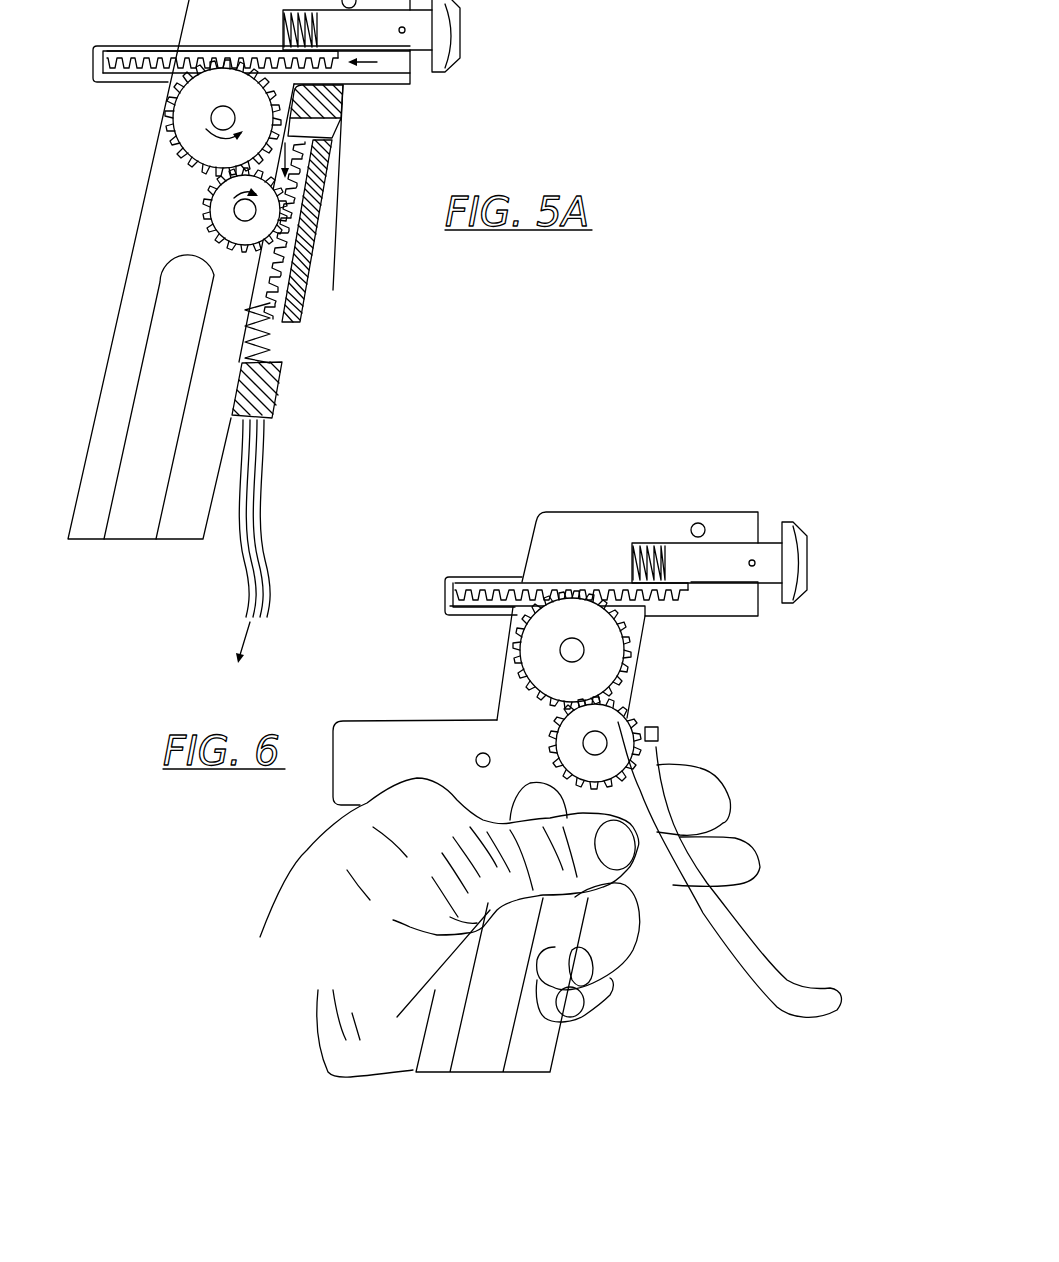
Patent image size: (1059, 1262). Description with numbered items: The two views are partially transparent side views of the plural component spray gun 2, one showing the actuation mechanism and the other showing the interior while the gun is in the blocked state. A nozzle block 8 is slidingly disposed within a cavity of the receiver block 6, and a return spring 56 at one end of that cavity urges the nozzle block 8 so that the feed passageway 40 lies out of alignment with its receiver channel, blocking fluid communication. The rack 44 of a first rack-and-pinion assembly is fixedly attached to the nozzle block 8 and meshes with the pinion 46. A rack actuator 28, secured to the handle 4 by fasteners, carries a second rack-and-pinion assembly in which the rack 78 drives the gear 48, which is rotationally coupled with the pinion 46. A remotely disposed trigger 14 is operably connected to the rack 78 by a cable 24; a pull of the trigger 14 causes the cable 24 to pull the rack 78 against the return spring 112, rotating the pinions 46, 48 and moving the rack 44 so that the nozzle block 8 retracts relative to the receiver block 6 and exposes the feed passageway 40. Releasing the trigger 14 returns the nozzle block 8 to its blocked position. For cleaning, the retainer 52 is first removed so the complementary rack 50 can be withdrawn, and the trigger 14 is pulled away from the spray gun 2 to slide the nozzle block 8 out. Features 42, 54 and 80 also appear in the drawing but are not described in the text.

In FIG. 5A, the plural component spray gun 2 is at (448, 111).
In FIG. 6, the plural component spray gun 2 is at (722, 695).
In FIG. 5A, the handle 4 is at (135, 540).
In FIG. 6, the handle 4 is at (562, 1043).
In FIG. 6, the receiver block 6 is at (743, 512).
In FIG. 6, the nozzle block 8 is at (772, 532).
In FIG. 6, the trigger 14 is at (778, 970).
In FIG. 5A, the cable 24 is at (258, 452).
In FIG. 5A, the rack actuator 28 is at (348, 173).
In FIG. 5A, the feed passageway 40 is at (402, 33).
In FIG. 6, the feed passageway 40 is at (752, 566).
In FIG. 6, the hand 42 is at (325, 833).
In FIG. 5A, the rack 44 is at (157, 55).
In FIG. 6, the rack 44 is at (505, 583).
In FIG. 5A, the pinion 46 is at (165, 132).
In FIG. 6, the pinion 46 is at (513, 667).
In FIG. 5A, the pinion/spur gear 48 is at (203, 207).
In FIG. 6, the pinion/spur gear 48 is at (627, 720).
In FIG. 5A, the complementary rack 50 is at (120, 75).
In FIG. 6, the complementary rack 50 is at (468, 607).
In FIG. 5A, the retainer 52 is at (95, 50).
In FIG. 6, the retainer 52 is at (445, 588).
In FIG. 6, the frame 54 is at (392, 720).
In FIG. 6, the return spring 56 is at (643, 543).
In FIG. 5A, the rack 78 is at (302, 303).
In FIG. 5A, the rack backing 80 is at (305, 238).
In FIG. 5A, the return spring 112 is at (254, 351).